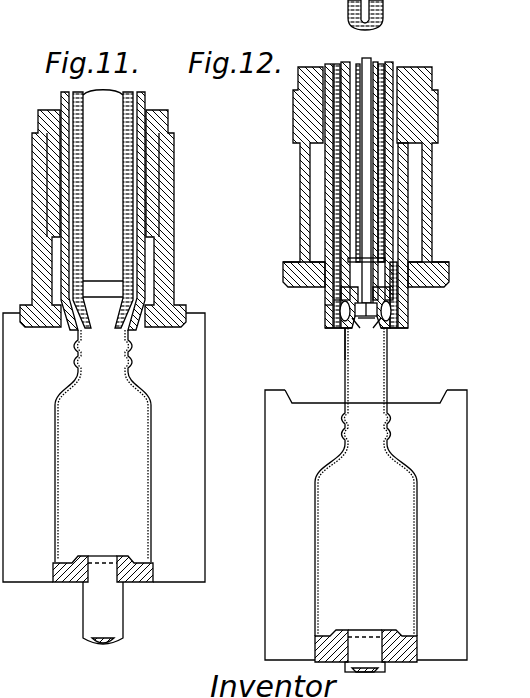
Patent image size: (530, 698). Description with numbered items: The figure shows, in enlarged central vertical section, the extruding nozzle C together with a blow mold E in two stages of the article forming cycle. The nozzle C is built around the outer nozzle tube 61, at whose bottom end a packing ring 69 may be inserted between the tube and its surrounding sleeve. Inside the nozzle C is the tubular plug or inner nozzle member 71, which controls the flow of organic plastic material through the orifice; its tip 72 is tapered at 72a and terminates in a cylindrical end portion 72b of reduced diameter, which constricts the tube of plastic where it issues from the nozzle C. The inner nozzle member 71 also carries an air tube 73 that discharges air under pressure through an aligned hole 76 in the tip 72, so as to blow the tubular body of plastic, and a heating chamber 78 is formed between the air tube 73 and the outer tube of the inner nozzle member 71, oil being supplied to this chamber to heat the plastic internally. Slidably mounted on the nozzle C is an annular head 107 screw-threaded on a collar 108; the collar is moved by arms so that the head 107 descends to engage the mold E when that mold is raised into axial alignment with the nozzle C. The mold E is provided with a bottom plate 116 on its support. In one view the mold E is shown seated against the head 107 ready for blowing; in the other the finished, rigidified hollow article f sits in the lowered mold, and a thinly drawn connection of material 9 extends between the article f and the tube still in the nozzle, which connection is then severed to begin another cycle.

In FIG. 11, the collar 108 is at (172, 157).
In FIG. 11, the extruding nozzle C is at (145, 259).
In FIG. 12, the extruding nozzle C is at (316, 324).
In FIG. 11, the blow mold E is at (190, 384).
In FIG. 12, the blow mold E is at (265, 508).
In FIG. 11, the finished article f is at (103, 446).
In FIG. 12, the finished article f is at (366, 482).
In FIG. 11, the bottom plate 116 is at (62, 585).
In FIG. 12, the bottom plate 116 is at (342, 632).
In FIG. 12, the outer nozzle tube 61 is at (330, 197).
In FIG. 12, the annular head 107 is at (290, 262).
In FIG. 12, the inner nozzle member 71 is at (355, 173).
In FIG. 12, the heating chamber 78 is at (377, 115).
In FIG. 12, the air tube 73 is at (372, 60).
In FIG. 12, the hole 76 is at (350, 300).
In FIG. 12, the tip 72 is at (395, 305).
In FIG. 12, the tapered portion 72a is at (378, 302).
In FIG. 12, the cylindrical end portion 72b is at (374, 318).
In FIG. 12, the packing ring 69 is at (310, 330).
In FIG. 12, the bottle neck 9 is at (345, 362).